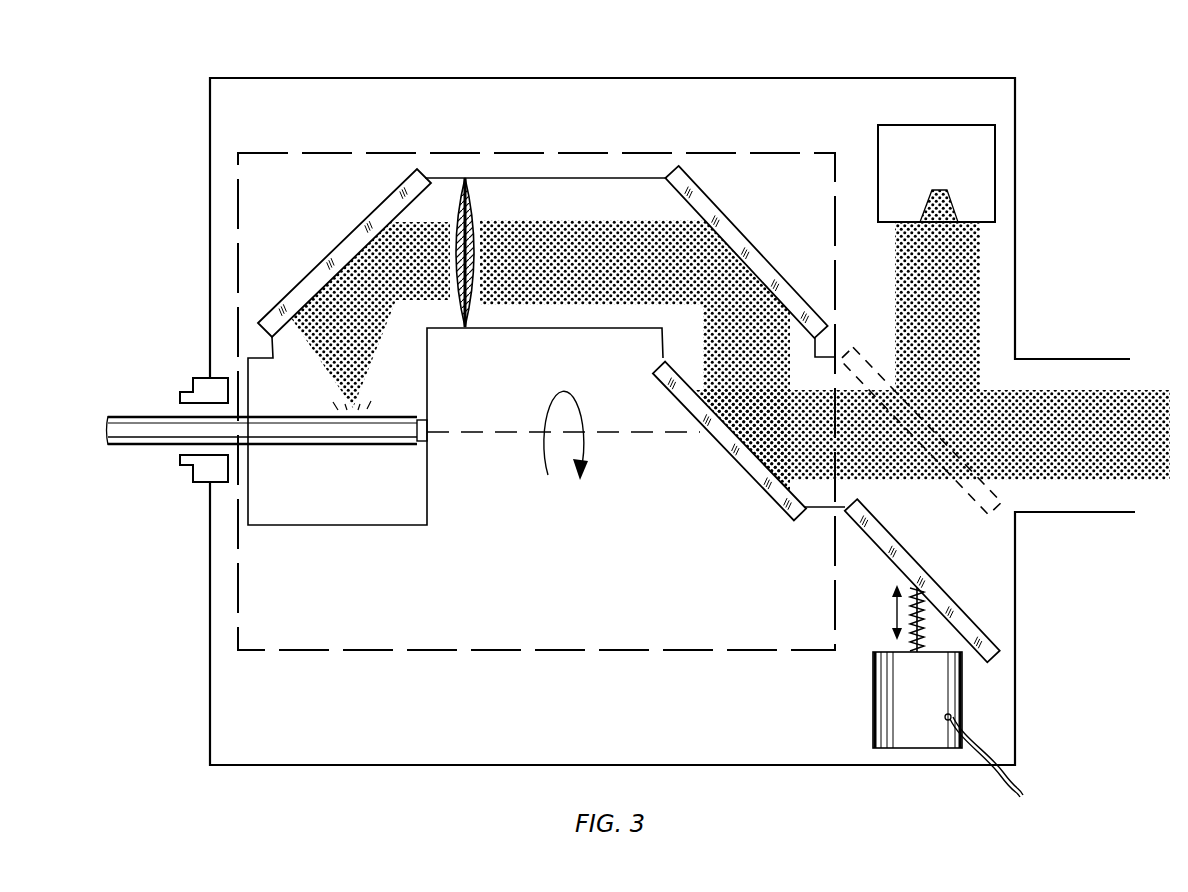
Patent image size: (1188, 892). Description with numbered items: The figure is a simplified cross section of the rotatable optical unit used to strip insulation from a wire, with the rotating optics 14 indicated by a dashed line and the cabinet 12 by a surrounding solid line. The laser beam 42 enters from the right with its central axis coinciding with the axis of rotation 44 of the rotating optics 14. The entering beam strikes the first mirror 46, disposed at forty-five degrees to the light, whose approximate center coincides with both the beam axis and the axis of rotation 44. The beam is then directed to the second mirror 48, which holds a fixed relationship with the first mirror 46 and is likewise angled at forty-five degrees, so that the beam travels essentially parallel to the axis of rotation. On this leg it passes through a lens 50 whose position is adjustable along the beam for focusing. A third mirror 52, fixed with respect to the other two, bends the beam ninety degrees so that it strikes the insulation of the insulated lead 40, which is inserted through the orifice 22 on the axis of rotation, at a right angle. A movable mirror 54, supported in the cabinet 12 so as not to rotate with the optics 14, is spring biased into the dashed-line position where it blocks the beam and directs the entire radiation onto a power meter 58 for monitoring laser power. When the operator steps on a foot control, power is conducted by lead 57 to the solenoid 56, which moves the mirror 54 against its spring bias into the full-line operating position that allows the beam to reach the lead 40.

The cabinet 12 is at (677, 92).
The rotating optics 14 is at (627, 645).
The orifice 22 is at (188, 450).
The insulated lead 40 is at (138, 425).
The laser beam 42 is at (1103, 482).
The axis of rotation 44 is at (490, 433).
The first mirror 46 is at (733, 456).
The second mirror 48 is at (732, 233).
The lens 50 is at (476, 206).
The third mirror 52 is at (363, 223).
The movable mirror 54 is at (963, 607).
The solenoid 56 is at (907, 700).
The lead 57 is at (1018, 787).
The power meter 58 is at (987, 167).